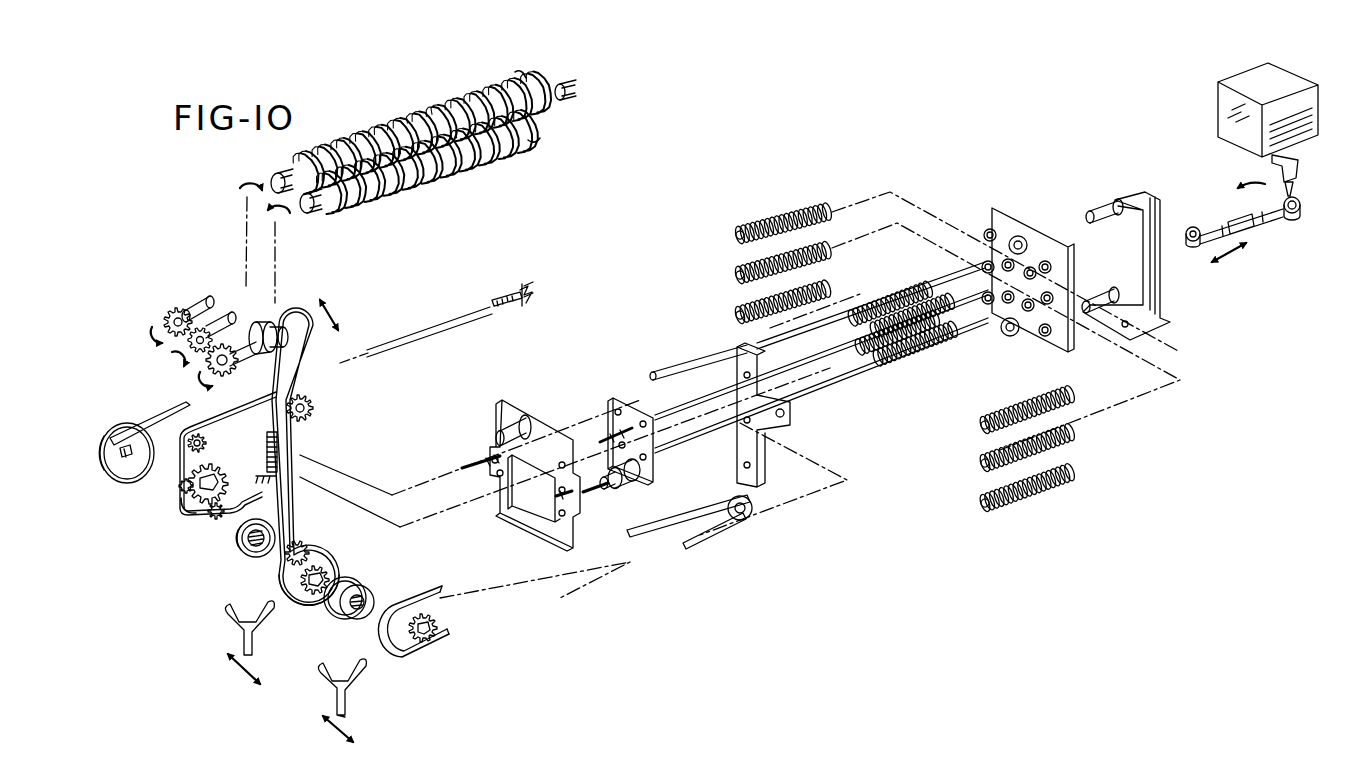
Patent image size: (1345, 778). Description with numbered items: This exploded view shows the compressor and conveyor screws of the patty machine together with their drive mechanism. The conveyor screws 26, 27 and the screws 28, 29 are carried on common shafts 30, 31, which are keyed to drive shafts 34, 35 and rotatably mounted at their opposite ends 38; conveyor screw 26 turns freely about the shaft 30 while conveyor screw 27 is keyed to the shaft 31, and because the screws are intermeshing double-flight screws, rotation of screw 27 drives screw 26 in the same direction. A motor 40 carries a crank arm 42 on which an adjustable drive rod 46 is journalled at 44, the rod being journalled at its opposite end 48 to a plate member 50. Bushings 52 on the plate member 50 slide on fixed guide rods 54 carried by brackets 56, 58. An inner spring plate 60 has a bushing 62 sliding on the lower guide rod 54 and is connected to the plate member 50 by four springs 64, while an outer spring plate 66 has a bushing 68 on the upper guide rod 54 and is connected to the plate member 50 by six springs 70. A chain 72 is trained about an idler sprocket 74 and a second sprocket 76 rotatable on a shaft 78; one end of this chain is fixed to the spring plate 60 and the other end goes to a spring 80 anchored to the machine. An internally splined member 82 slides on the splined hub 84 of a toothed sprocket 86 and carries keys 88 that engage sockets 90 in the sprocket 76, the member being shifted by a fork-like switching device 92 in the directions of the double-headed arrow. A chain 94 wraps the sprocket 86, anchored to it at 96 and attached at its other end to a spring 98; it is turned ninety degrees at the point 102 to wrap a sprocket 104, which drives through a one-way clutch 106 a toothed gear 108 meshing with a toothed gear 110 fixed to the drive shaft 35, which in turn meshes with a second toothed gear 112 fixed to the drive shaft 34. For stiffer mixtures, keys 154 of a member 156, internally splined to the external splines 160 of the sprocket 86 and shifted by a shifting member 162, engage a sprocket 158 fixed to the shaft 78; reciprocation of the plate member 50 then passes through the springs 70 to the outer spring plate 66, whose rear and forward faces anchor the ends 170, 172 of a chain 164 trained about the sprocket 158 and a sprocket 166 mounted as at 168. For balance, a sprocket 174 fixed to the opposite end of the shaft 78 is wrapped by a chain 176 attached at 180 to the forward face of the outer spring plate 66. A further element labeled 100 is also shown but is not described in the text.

The conveyor screw 26 is at (392, 126).
The conveyor screw 27 is at (452, 168).
The compressor screw 28 is at (512, 80).
The compressor screw 29 is at (527, 150).
The common shaft 30 is at (275, 172).
The common shaft 31 is at (312, 213).
The drive shaft 34 is at (198, 300).
The drive shaft 35 is at (222, 316).
The opposite ends of shafts 38 is at (569, 86).
The motor 40 is at (1232, 78).
The crank arm 42 is at (1300, 161).
The journal 44 is at (1301, 201).
The adjustable drive rod 46 is at (1238, 222).
The opposite end of drive rod 48 is at (1196, 244).
The plate member 50 is at (1005, 208).
The bushings 52 is at (1024, 240).
The fixed guide rods 54 is at (670, 370).
The bracket 56 is at (1160, 298).
The bracket 58 is at (740, 346).
The inner spring plate 60 is at (613, 396).
The bushing 62 is at (638, 480).
The springs 64 is at (891, 300).
The outer spring plate 66 is at (498, 410).
The bushing 68 is at (522, 416).
The springs 70 is at (736, 315).
The chain 72 is at (178, 490).
The idler sprocket 74 is at (181, 438).
The second sprocket 76 is at (183, 513).
The shaft 78 is at (101, 438).
The spring 80 is at (398, 336).
The internally splined member 82 is at (238, 546).
The splined hub 84 is at (255, 548).
The toothed sprocket 86 is at (304, 541).
The key 88 is at (226, 484).
The sockets 90 is at (205, 447).
The fork-like switching device 92 is at (240, 634).
The chain 94 is at (290, 488).
The anchor point 96 is at (332, 545).
The spring 98 is at (266, 434).
The sprocket 100 is at (305, 424).
The point of rotation of chain 102 is at (322, 480).
The sprocket 104 is at (296, 308).
The one-way clutch 106 is at (254, 362).
The toothed gear 108 is at (205, 368).
The toothed gear 110 is at (188, 346).
The second toothed gear 112 is at (164, 315).
The keys 154 is at (372, 598).
The member 156 is at (368, 586).
The sprocket 158 is at (402, 645).
The external splines 160 is at (308, 600).
The shifting member 162 is at (352, 696).
The chain 164 is at (698, 546).
The sprocket 166 is at (740, 521).
The mounting 168 is at (786, 417).
The chain end anchor 170 is at (554, 496).
The chain end anchor 172 is at (592, 496).
The sprocket 174 is at (108, 478).
The chain 176 is at (143, 424).
The chain attachment point 180 is at (478, 459).